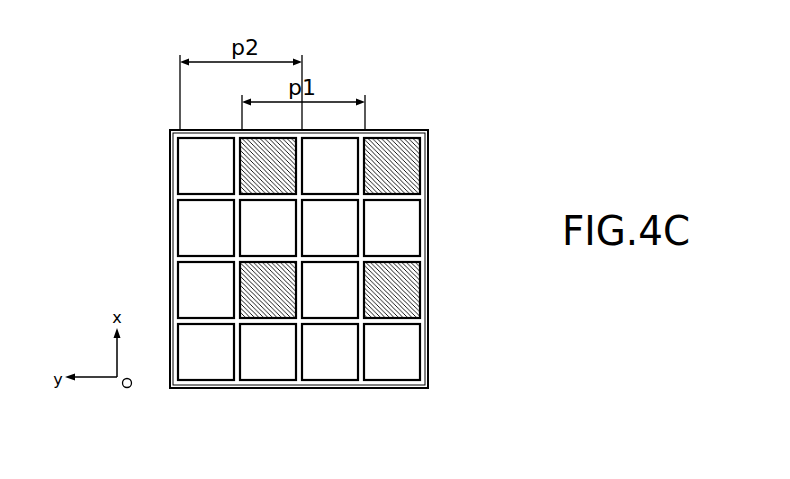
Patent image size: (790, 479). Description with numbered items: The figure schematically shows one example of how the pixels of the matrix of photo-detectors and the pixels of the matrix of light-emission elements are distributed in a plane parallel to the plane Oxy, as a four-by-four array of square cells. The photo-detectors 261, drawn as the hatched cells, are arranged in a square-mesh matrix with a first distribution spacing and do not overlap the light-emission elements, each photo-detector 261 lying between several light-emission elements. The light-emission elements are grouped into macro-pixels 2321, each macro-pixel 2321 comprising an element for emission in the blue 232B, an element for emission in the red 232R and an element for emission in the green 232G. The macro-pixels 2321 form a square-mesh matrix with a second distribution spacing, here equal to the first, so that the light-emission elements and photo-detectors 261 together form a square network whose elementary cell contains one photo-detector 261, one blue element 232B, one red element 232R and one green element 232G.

The photo-detector 261 is at (415, 285).
The macro-pixel 2321 is at (423, 328).
The element for emission in the red 232R is at (342, 367).
The element for emission in the green 232G is at (317, 300).
The element for emission in the blue 232B is at (408, 360).